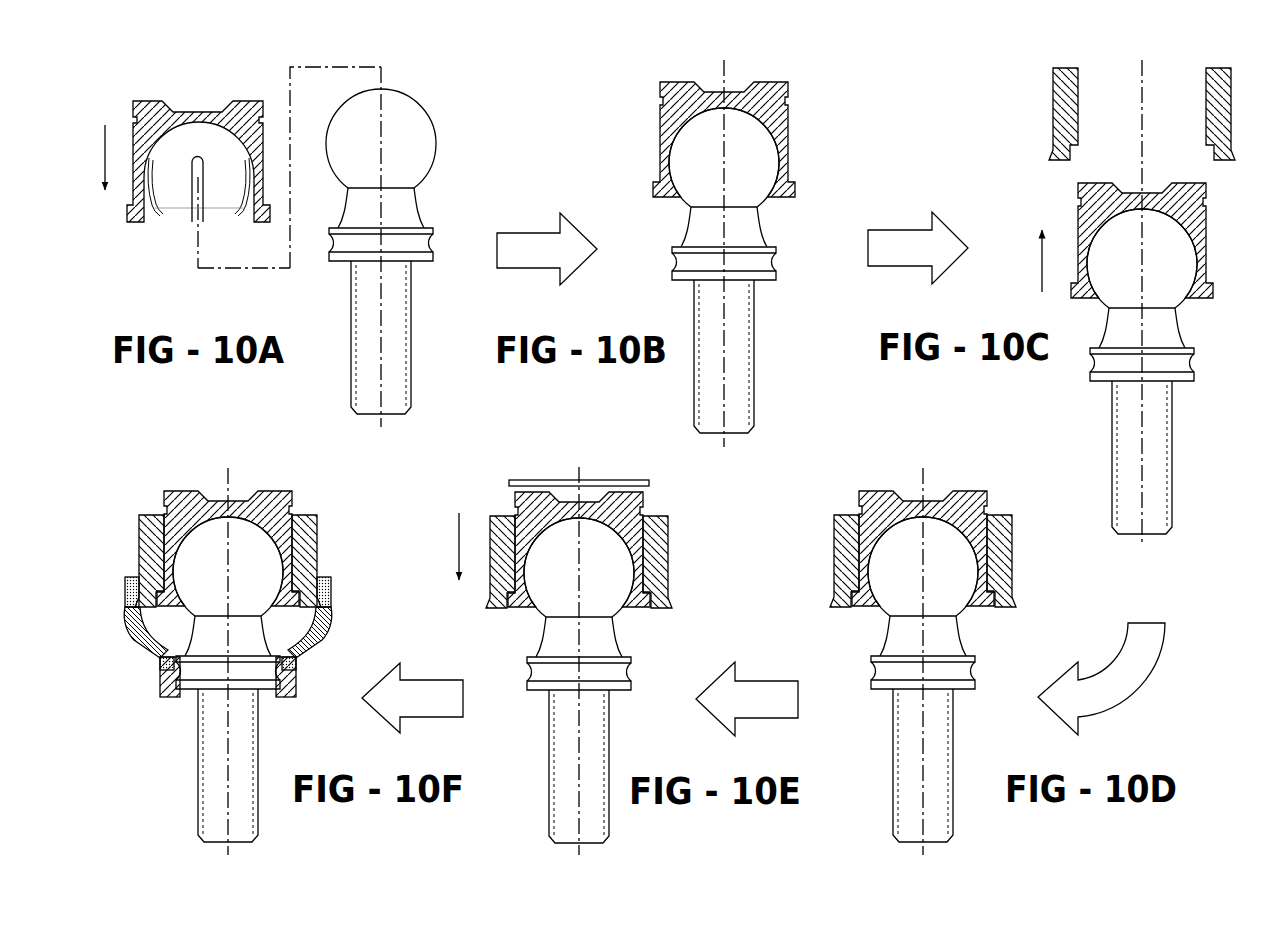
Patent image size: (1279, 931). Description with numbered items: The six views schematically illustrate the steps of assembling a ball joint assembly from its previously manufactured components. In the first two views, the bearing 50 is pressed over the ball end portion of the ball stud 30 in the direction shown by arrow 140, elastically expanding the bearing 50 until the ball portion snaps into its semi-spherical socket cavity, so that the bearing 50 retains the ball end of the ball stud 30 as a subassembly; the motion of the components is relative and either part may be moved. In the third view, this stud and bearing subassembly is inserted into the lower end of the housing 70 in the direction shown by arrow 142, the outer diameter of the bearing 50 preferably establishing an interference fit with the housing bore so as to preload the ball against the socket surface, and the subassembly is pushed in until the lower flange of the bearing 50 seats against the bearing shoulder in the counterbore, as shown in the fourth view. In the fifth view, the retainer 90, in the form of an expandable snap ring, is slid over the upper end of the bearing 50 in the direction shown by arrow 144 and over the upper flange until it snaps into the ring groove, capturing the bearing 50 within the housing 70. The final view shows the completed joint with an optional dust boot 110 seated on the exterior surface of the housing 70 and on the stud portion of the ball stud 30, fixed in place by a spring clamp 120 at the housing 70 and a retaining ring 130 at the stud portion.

In FIG. 10A, the ball stud 30 is at (416, 206).
In FIG. 10B, the ball stud 30 is at (763, 230).
In FIG. 10C, the ball stud 30 is at (1181, 326).
In FIG. 10D, the ball stud 30 is at (959, 638).
In FIG. 10E, the ball stud 30 is at (616, 639).
In FIG. 10F, the ball stud 30 is at (269, 642).
In FIG. 10A, the bearing 50 is at (266, 157).
In FIG. 10B, the bearing 50 is at (793, 136).
In FIG. 10C, the bearing 50 is at (1207, 247).
In FIG. 10D, the bearing 50 is at (993, 489).
In FIG. 10E, the bearing 50 is at (521, 612).
In FIG. 10F, the bearing 50 is at (172, 611).
In FIG. 10C, the housing 70 is at (1053, 110).
In FIG. 10D, the housing 70 is at (1013, 567).
In FIG. 10E, the housing 70 is at (669, 558).
In FIG. 10F, the housing 70 is at (318, 562).
In FIG. 10E, the retainer 90 is at (553, 475).
In FIG. 10F, the dust boot 110 is at (328, 630).
In FIG. 10F, the spring clamp 120 is at (123, 592).
In FIG. 10F, the retaining ring 130 is at (298, 673).
In FIG. 10A, the arrow 140 is at (106, 146).
In FIG. 10C, the arrow 142 is at (1042, 254).
In FIG. 10E, the arrow 144 is at (459, 540).